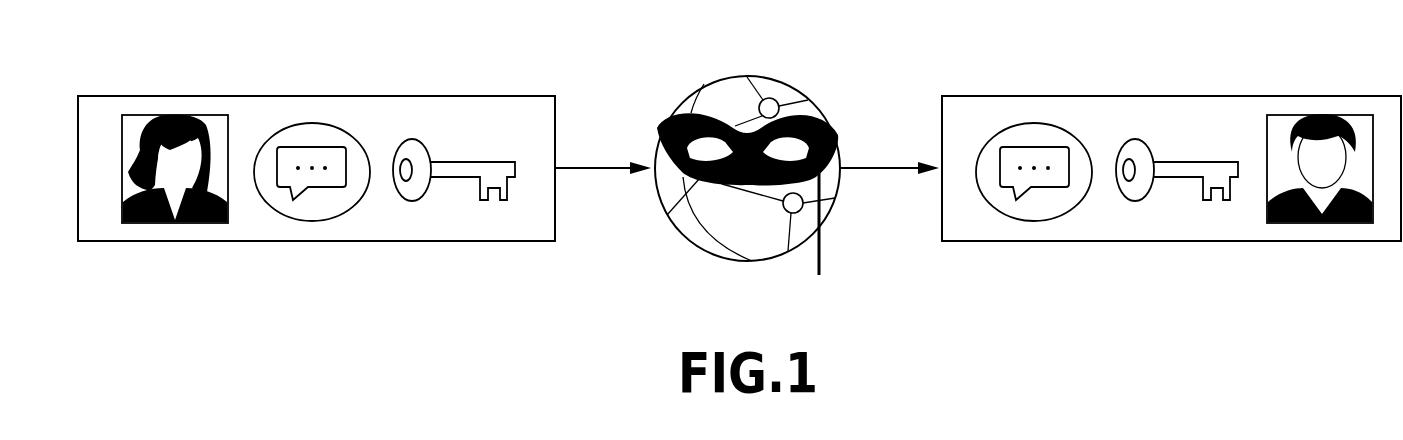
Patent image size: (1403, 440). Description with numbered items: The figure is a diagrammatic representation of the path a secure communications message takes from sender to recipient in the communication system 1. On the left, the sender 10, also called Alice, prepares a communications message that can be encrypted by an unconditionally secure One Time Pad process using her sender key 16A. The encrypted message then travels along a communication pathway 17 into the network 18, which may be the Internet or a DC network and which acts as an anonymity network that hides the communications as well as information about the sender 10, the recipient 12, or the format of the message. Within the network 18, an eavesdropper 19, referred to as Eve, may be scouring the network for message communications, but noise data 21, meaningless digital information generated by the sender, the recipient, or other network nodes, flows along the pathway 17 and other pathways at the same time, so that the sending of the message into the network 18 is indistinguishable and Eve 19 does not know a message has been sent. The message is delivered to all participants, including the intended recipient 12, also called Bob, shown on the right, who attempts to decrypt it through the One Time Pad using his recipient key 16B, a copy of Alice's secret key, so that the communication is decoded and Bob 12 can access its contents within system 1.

The communication system 1 is at (1402, 322).
The sender 10 is at (142, 120).
The recipient 12 is at (1285, 122).
The sender key 16A is at (463, 167).
The recipient key 16B is at (1187, 167).
The communication pathway 17 is at (592, 167).
The network 18 is at (702, 70).
The eavesdropper 19 is at (795, 118).
The noise data 21 is at (771, 99).